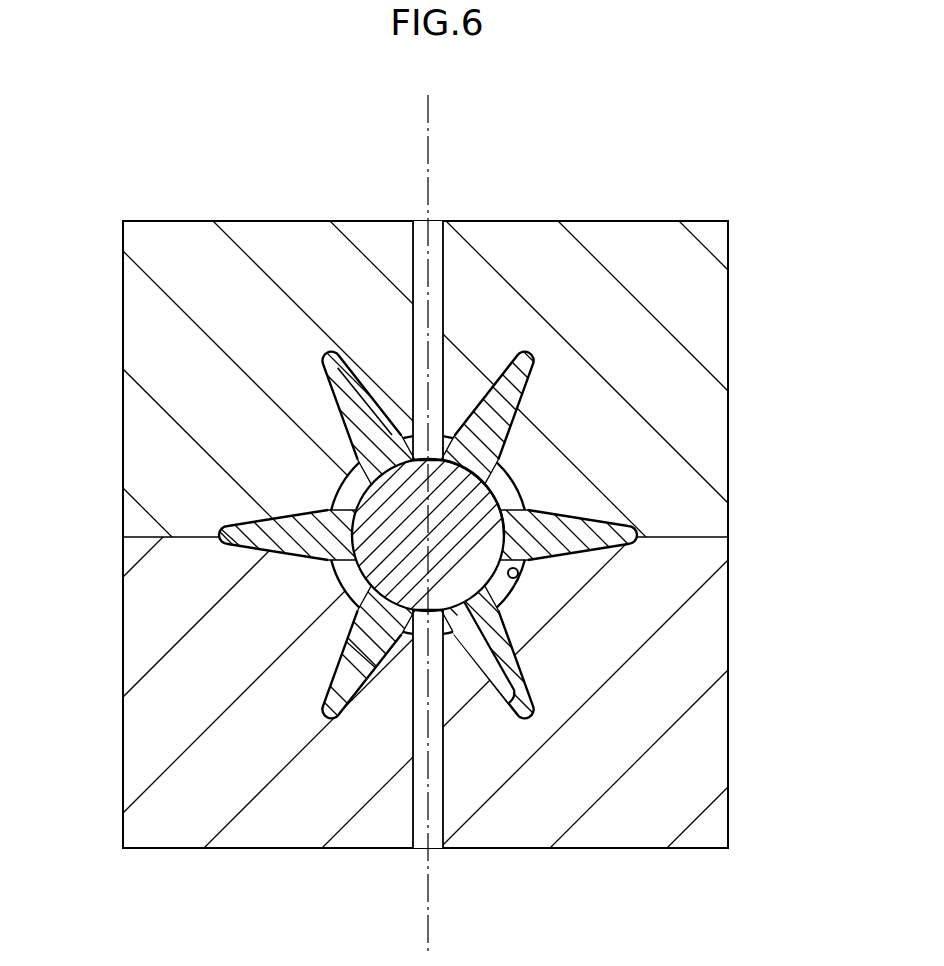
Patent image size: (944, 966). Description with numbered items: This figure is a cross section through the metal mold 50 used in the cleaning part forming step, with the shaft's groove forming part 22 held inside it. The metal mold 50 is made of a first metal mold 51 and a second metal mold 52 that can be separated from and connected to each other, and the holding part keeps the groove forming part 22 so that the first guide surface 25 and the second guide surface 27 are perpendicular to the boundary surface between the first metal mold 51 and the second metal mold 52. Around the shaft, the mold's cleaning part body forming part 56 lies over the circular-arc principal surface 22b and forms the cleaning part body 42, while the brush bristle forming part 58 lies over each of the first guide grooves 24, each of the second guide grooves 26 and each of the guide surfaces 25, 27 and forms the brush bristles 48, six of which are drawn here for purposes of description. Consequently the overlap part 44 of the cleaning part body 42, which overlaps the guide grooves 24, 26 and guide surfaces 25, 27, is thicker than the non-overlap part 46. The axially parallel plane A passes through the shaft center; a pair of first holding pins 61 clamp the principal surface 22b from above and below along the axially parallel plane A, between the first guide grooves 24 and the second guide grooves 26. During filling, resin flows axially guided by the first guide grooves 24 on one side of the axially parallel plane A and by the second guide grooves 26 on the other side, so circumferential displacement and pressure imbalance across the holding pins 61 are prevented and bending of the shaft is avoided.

The groove forming part 22 is at (410, 465).
The principal surface 22b is at (446, 452).
The first holding pins 61 is at (415, 245).
The first guide grooves 24 is at (517, 421).
The first guide surface 25 is at (524, 510).
The overlap part 44 is at (357, 460).
The non-overlap part 46 is at (345, 487).
The second guide surface 27 is at (335, 560).
The second guide grooves 26 is at (360, 607).
The brush bristles 48 is at (508, 718).
The brush bristle forming part 58 is at (499, 700).
The cleaning part body forming part 56 is at (528, 566).
The cleaning part body 42 is at (519, 576).
The metal mold 50 is at (472, 534).
The first metal mold 51 is at (713, 461).
The second metal mold 52 is at (806, 462).
The axially parallel plane A is at (432, 118).